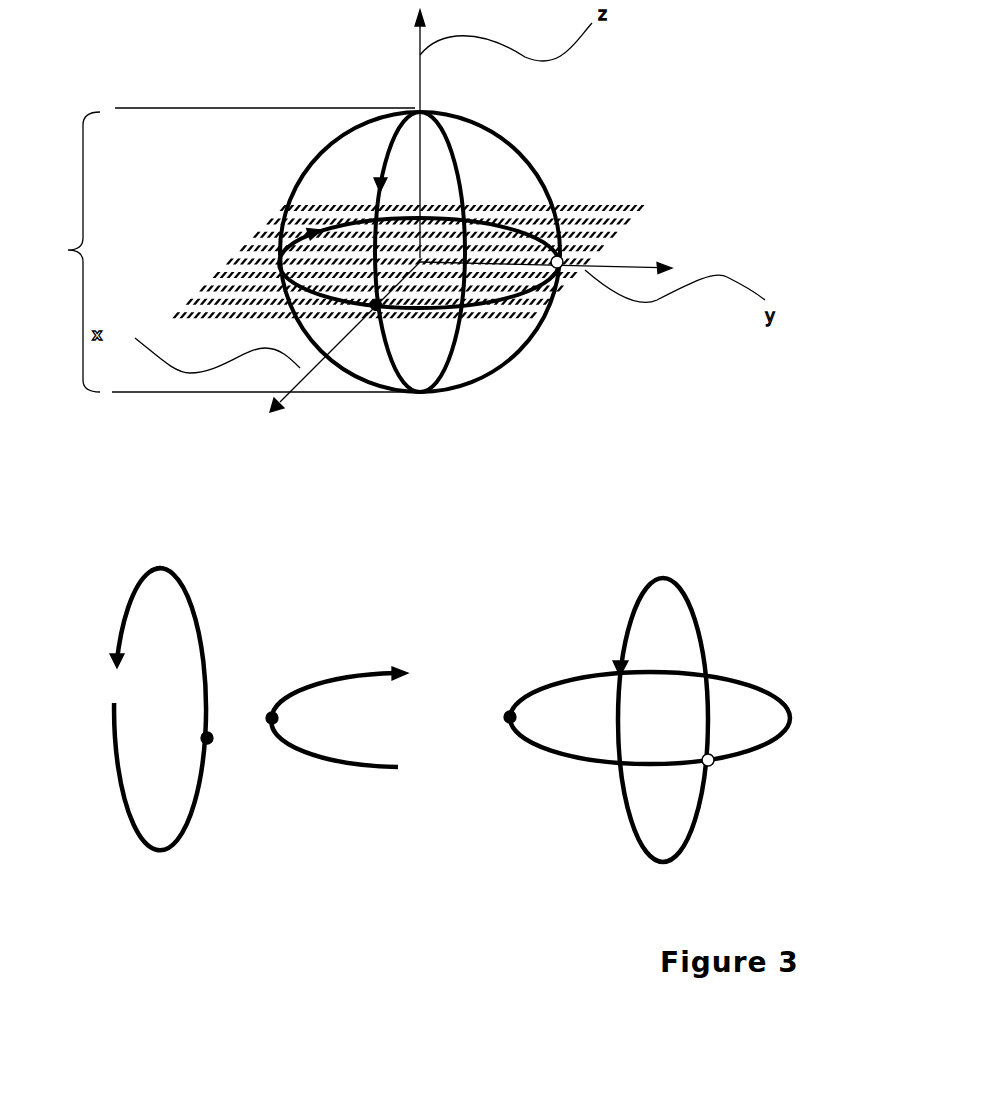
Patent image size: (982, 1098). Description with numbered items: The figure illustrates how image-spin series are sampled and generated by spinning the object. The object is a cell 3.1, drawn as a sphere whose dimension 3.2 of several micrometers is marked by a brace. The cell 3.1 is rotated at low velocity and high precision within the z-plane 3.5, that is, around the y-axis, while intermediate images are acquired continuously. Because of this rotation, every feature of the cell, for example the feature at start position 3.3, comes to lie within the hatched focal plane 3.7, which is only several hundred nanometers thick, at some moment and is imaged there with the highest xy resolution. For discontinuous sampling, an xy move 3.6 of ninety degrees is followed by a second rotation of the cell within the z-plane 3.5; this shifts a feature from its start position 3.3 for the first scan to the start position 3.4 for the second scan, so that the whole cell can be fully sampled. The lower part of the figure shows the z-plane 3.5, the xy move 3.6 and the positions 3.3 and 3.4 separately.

The cell 3.1 is at (478, 125).
The dimension 3.2 is at (213, 250).
The feature start position 3.3 is at (560, 258).
The second start position 3.4 is at (380, 309).
The z-plane 3.5 is at (462, 180).
The xy move 3.6 is at (333, 220).
The focal plane 3.7 is at (630, 207).